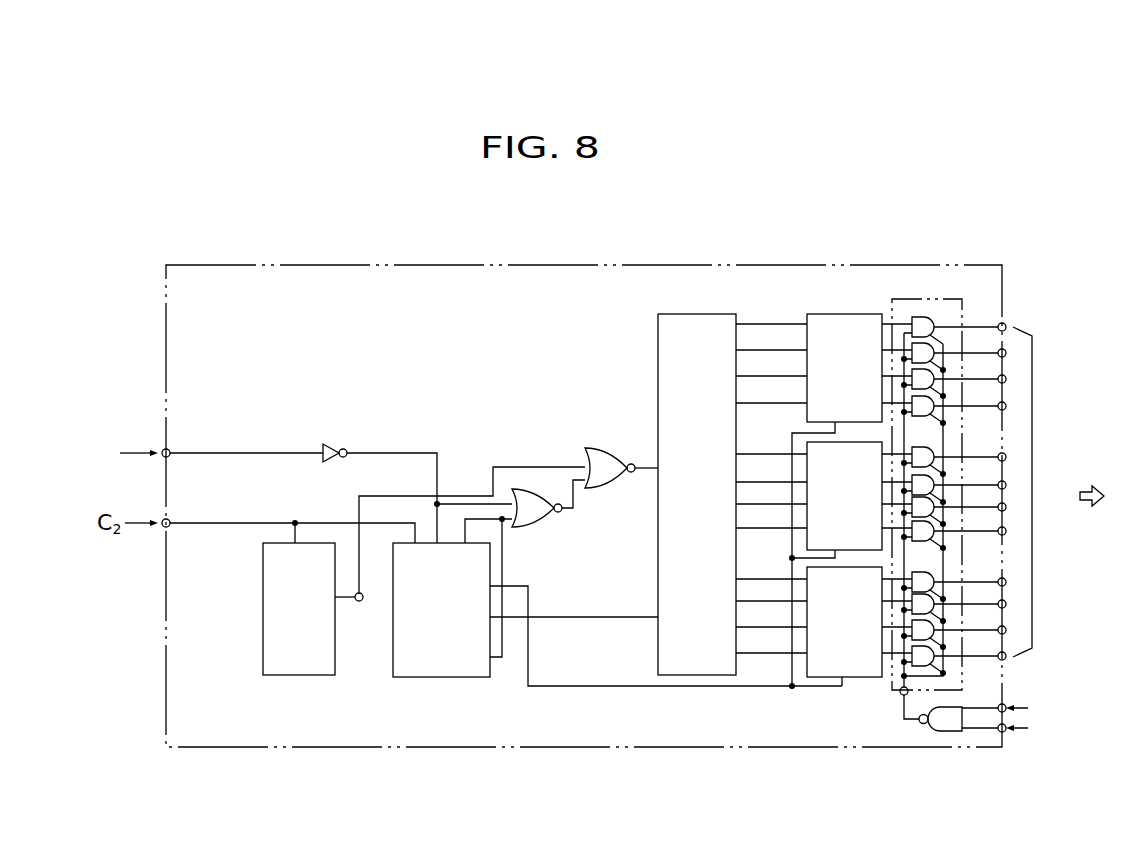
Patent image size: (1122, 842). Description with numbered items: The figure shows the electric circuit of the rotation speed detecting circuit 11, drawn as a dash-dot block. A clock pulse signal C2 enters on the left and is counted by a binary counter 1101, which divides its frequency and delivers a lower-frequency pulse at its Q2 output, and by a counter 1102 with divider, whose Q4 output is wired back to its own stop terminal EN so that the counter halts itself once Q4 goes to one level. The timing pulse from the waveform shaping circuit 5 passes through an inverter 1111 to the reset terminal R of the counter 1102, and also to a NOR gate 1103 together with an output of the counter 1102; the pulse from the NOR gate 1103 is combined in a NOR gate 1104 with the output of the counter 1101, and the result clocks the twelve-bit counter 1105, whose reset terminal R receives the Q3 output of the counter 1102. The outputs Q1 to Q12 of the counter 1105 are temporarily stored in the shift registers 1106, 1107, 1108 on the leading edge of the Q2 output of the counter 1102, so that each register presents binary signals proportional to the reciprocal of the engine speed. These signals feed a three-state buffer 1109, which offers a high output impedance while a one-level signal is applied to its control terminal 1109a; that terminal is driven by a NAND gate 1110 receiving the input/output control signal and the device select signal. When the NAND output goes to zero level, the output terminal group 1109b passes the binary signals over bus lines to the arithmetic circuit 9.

The rotation speed detecting circuit 11 is at (588, 262).
The waveform shaping circuit 5 is at (209, 454).
The arithmetic circuit 9 is at (1101, 498).
The binary counter 1101 is at (283, 677).
The counter with divider 1102 is at (420, 677).
The NOR gate 1103 is at (545, 521).
The NOR gate 1104 is at (612, 457).
The 12-bit counter 1105 is at (694, 314).
The shift register 1106 is at (856, 314).
The shift register 1107 is at (812, 438).
The shift register 1108 is at (858, 678).
The three-state buffer 1109 is at (936, 284).
The control terminal 1109a is at (902, 700).
The output terminal group 1109b is at (1044, 492).
The NAND gate 1110 is at (938, 733).
The inverter 1111 is at (334, 450).